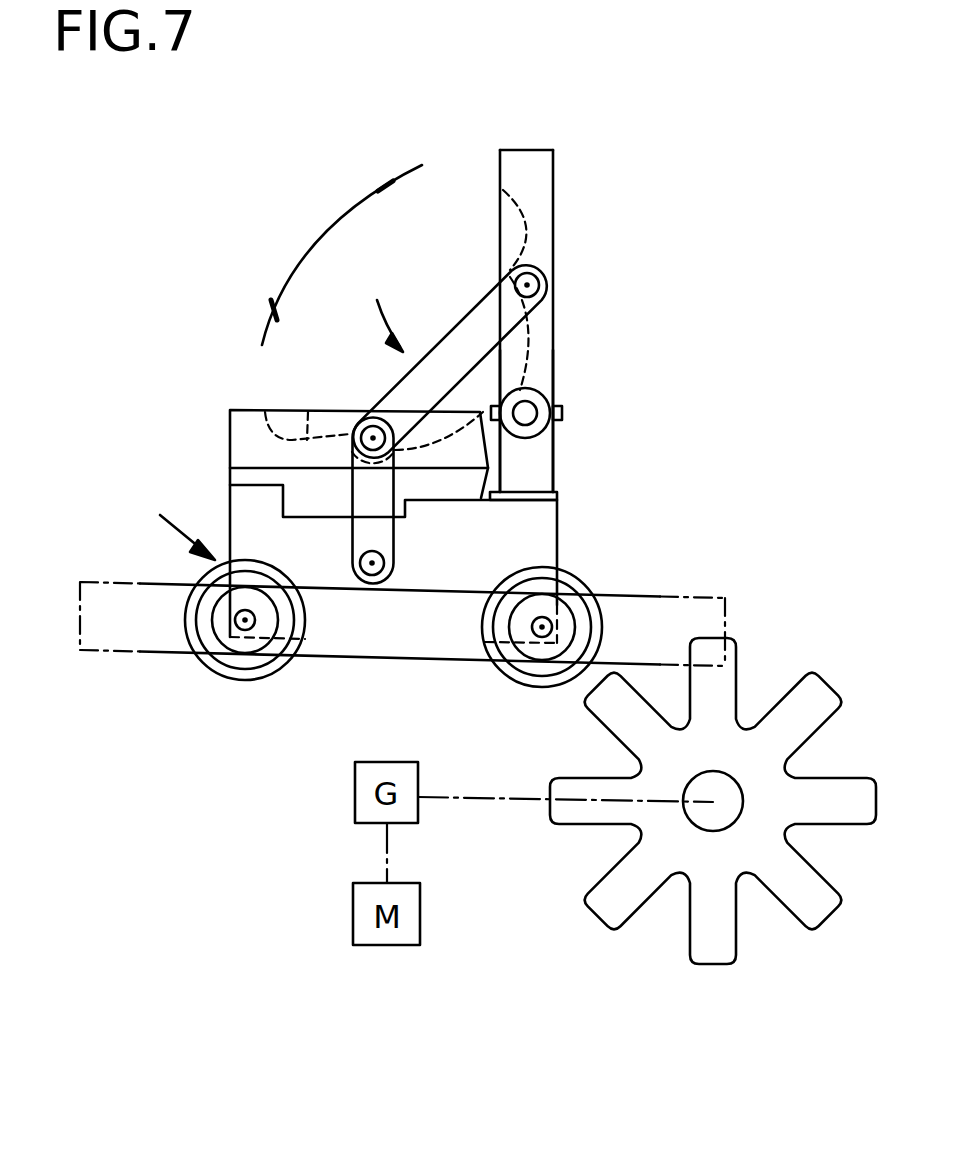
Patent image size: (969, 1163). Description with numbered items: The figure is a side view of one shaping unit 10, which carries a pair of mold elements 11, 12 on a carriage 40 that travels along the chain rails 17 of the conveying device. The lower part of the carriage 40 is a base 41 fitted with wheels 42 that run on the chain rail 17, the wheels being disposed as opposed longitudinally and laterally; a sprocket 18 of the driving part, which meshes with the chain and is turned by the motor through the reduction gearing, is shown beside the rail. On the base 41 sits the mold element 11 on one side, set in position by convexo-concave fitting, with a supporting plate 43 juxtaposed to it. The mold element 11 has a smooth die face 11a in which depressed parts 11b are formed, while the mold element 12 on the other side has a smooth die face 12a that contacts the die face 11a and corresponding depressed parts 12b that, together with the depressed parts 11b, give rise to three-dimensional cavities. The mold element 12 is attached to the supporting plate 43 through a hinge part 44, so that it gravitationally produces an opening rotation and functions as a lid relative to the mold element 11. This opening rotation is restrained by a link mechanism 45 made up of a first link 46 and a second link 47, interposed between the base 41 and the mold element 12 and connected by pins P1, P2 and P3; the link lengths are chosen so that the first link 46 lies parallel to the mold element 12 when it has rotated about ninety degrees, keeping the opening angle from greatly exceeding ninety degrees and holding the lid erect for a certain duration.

The shaping unit 10 is at (225, 219).
The mold element on one side 11 is at (240, 432).
The smooth die face 11a is at (244, 408).
The depressed parts 11b is at (308, 408).
The mold element on the other side 12 is at (556, 292).
The smooth die face 12a is at (500, 172).
The depressed parts 12b is at (500, 222).
The chain rail 17 is at (118, 655).
The sprocket 18 is at (620, 890).
The carriage 40 is at (166, 532).
The base 41 is at (540, 552).
The wheels 42 is at (248, 648).
The supporting plate 43 is at (538, 463).
The hinge part 44 is at (527, 412).
The link mechanism 45 is at (379, 311).
The first link 46 is at (370, 518).
The second link 47 is at (450, 340).
The pin P1 is at (384, 563).
The pin P2 is at (356, 456).
The pin P3 is at (540, 285).